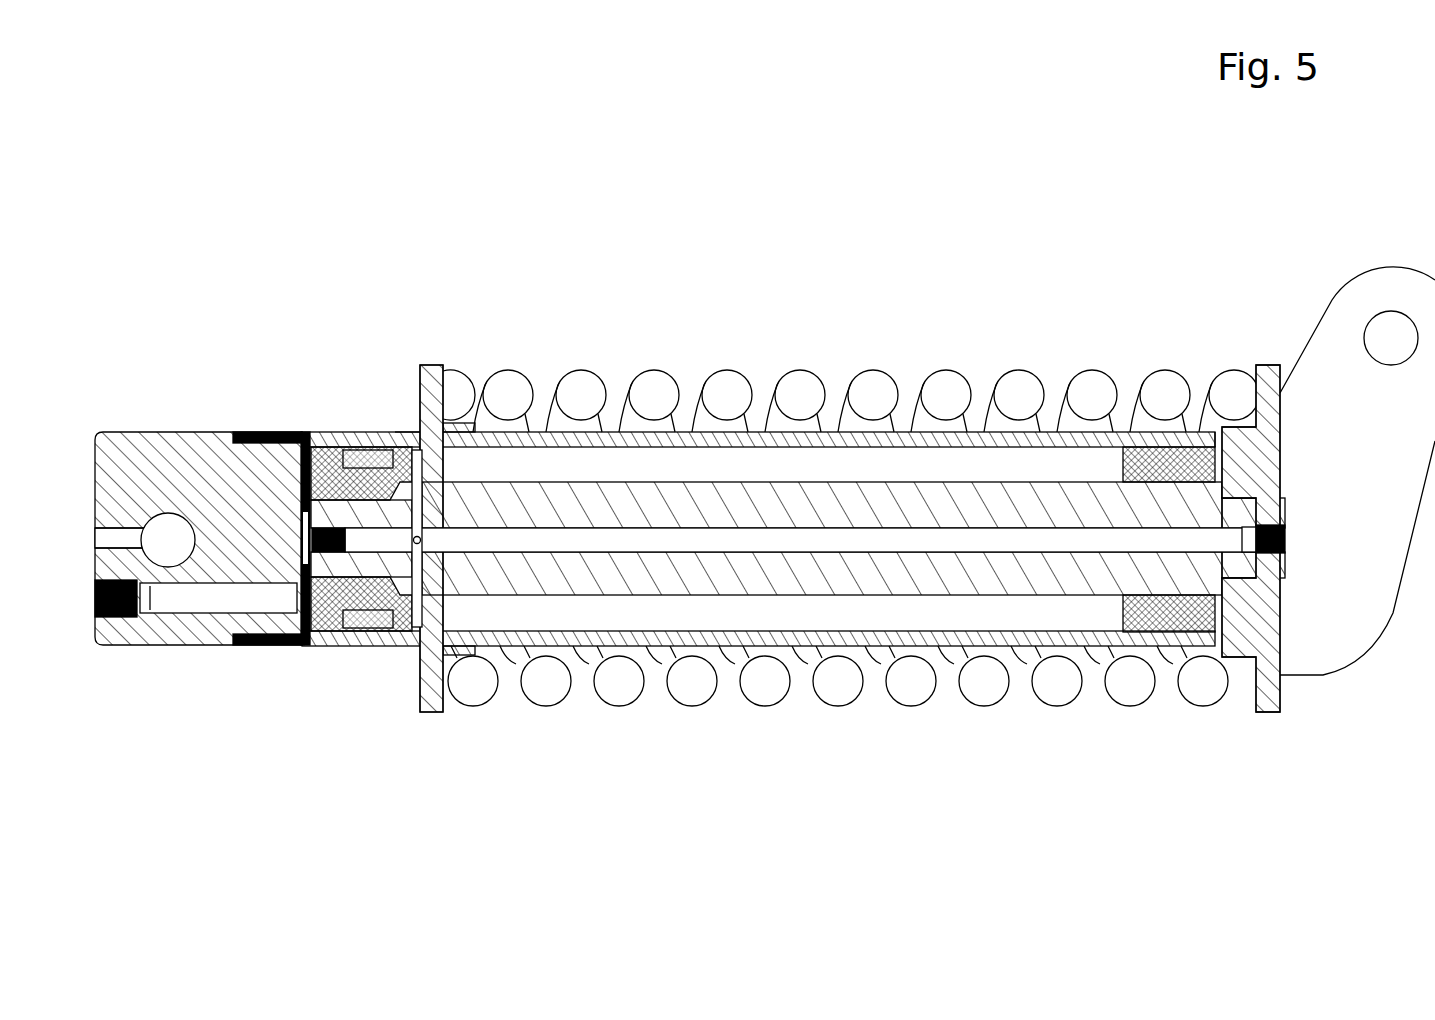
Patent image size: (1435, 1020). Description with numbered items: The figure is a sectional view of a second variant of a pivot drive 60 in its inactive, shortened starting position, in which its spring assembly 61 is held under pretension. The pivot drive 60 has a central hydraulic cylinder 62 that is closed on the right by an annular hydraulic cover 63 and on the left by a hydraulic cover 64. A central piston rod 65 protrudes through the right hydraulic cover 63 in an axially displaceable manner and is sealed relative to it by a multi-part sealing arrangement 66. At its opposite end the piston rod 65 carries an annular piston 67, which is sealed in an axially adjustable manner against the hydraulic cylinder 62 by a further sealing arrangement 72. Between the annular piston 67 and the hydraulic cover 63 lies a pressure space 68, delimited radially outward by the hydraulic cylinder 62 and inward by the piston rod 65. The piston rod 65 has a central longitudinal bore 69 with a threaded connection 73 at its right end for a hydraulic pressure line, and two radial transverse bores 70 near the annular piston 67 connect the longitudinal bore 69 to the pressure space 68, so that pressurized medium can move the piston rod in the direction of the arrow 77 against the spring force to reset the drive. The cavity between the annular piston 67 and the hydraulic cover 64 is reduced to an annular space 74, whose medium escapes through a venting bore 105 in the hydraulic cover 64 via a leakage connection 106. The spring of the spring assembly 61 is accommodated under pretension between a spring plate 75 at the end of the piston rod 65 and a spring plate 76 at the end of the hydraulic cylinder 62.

The pivot drive 60 is at (1073, 740).
The spring assembly 61 is at (678, 715).
The hydraulic cylinder 62 is at (912, 437).
The hydraulic cover 63 is at (1143, 430).
The hydraulic cover 64 is at (172, 452).
The piston rod 65 is at (878, 578).
The sealing arrangement 66 is at (1187, 430).
The annular piston 67 is at (395, 435).
The pressure space 68 is at (712, 467).
The longitudinal bore 69 is at (995, 541).
The transverse bores 70 is at (418, 500).
The sealing arrangement 72 is at (365, 437).
The threaded connection 73 is at (1287, 542).
The annular space 74 is at (307, 645).
The spring plate 75 is at (1265, 375).
The spring plate 76 is at (427, 712).
The arrow 77 is at (842, 203).
The venting bore 105 is at (250, 600).
The leakage connection 106 is at (112, 645).